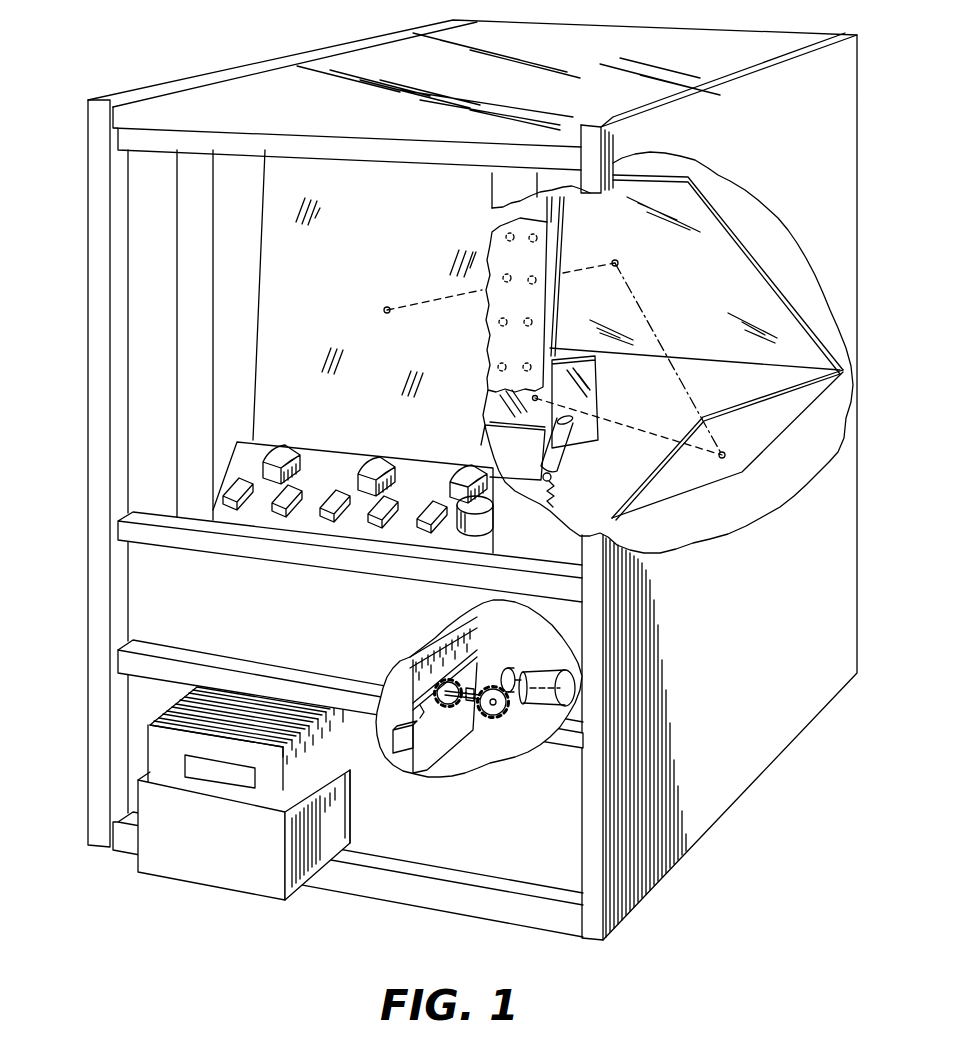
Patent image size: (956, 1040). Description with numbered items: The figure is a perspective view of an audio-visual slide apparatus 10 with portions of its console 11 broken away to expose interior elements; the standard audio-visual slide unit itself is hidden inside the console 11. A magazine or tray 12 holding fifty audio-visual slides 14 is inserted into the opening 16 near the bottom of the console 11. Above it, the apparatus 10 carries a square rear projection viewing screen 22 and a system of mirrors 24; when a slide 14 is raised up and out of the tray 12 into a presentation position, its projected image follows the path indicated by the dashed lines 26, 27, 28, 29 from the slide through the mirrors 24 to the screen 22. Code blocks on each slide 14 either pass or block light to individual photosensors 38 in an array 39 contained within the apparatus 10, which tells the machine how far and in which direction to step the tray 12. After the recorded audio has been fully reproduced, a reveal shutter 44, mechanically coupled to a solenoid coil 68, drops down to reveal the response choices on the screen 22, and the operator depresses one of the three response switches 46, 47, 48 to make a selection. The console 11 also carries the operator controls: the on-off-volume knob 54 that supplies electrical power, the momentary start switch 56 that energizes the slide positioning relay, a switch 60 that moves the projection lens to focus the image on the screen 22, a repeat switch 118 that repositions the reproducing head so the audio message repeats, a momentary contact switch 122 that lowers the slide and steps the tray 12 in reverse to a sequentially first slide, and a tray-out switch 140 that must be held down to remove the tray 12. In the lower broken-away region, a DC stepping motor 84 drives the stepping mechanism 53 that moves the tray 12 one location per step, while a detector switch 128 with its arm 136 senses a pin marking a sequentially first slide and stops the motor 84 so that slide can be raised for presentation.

The audio-visual slide apparatus 10 is at (315, 35).
The console 11 is at (92, 200).
The tray 12 is at (207, 876).
The audio-visual slides 14 is at (150, 722).
The opening 16 is at (347, 802).
The rear projection viewing screen 22 is at (360, 253).
The system of mirrors 24 is at (730, 252).
The dashed line 26 is at (502, 410).
The dashed line 27 is at (648, 433).
The dashed line 28 is at (652, 323).
The dashed line 29 is at (573, 272).
The photosensors 38 is at (516, 305).
The array 39 is at (556, 232).
The reveal shutter 44 is at (500, 448).
The response switch 46 is at (281, 453).
The response switch 47 is at (367, 471).
The response switch 48 is at (462, 478).
The stepping mechanism 53 is at (516, 712).
The on-off-volume knob 54 is at (485, 531).
The start switch 56 is at (375, 523).
The switch 60 is at (425, 531).
The solenoid coil 68 is at (562, 450).
The DC stepping motor 84 is at (538, 672).
The repeat switch 118 is at (328, 519).
The momentary contact switch 122 is at (279, 514).
The detector switch 128 is at (410, 755).
The arm 136 is at (427, 718).
The tray-out switch 140 is at (232, 506).